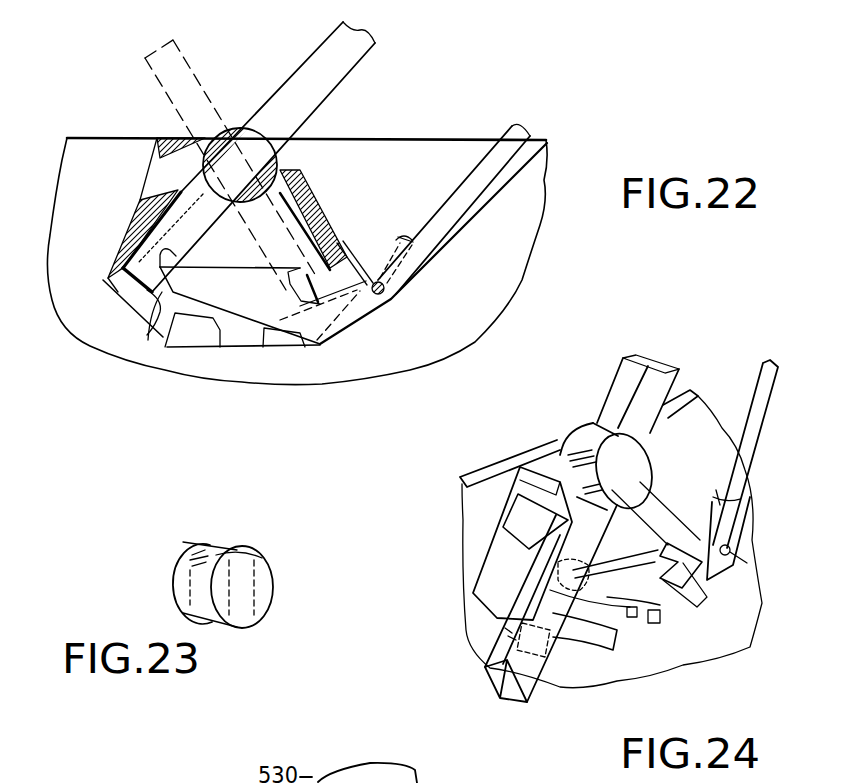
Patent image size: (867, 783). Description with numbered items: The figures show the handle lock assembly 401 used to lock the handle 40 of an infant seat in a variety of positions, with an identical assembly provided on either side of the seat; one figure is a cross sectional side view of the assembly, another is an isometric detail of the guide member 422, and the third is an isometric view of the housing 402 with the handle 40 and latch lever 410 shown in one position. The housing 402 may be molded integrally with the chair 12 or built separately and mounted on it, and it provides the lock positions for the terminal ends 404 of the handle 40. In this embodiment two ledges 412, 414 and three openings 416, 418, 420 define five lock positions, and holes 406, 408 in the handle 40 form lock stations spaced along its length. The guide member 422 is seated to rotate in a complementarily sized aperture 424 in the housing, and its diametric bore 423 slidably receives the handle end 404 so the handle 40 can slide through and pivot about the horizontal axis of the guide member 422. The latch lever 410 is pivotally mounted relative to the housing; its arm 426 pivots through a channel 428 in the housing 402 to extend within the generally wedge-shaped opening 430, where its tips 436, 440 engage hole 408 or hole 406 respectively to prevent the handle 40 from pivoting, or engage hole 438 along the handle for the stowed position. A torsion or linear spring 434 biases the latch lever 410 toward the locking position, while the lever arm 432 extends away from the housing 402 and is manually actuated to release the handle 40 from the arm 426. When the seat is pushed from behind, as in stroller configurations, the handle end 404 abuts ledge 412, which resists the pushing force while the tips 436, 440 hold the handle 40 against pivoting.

In FIG. 22, the chair 12 is at (96, 137).
In FIG. 22, the handle 40 is at (344, 79).
In FIG. 22, the handle lock assembly 401 is at (397, 127).
In FIG. 22, the housing 402 is at (130, 214).
In FIG. 22, the terminal ends 404 is at (143, 310).
In FIG. 22, the hole 406 is at (132, 230).
In FIG. 22, the hole 408 is at (146, 327).
In FIG. 22, the latch lever 410 is at (404, 297).
In FIG. 22, the ledge 412 is at (108, 290).
In FIG. 24, the ledge 414 is at (687, 600).
In FIG. 22, the opening 416 is at (150, 178).
In FIG. 22, the opening 418 is at (148, 340).
In FIG. 22, the opening 420 is at (247, 345).
In FIG. 22, the guide member 422 is at (242, 128).
In FIG. 23, the guide member 422 is at (172, 557).
In FIG. 23, the diametric bore 423 is at (224, 549).
In FIG. 24, the aperture 424 is at (590, 408).
In FIG. 22, the arm 426 is at (223, 294).
In FIG. 24, the channel 428 is at (662, 622).
In FIG. 24, the wedge-shaped opening 430 is at (660, 553).
In FIG. 22, the lever arm 432 is at (462, 190).
In FIG. 22, the spring 434 is at (357, 272).
In FIG. 22, the tip 436 is at (188, 258).
In FIG. 24, the hole 438 is at (645, 634).
In FIG. 22, the tip 440 is at (293, 268).